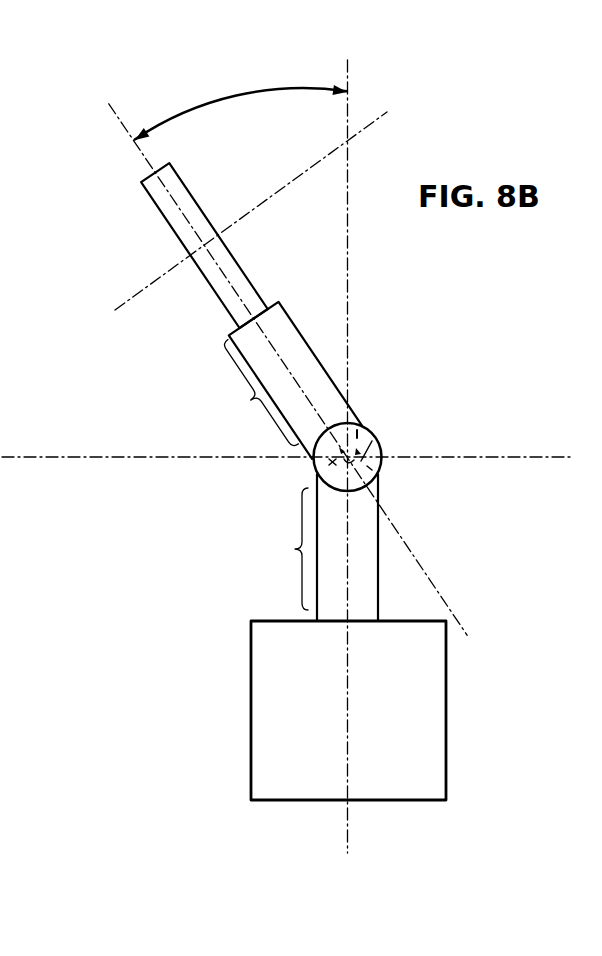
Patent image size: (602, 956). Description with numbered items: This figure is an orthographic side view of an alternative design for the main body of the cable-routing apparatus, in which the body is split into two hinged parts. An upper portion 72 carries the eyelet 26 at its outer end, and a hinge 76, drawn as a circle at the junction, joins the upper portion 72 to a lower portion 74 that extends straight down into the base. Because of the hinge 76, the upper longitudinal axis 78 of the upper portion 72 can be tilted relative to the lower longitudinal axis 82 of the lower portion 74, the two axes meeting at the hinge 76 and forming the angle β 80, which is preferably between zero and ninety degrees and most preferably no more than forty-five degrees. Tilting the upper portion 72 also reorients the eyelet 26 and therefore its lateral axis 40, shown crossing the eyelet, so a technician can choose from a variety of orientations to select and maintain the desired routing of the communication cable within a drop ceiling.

The eyelet 26 is at (172, 229).
The lateral axis 40 is at (127, 303).
The upper portion 72 is at (289, 380).
The lower portion 74 is at (321, 547).
The hinge 76 is at (385, 423).
The upper longitudinal axis 78 is at (113, 108).
The angle β 80 is at (225, 97).
The lower longitudinal axis 82 is at (349, 66).